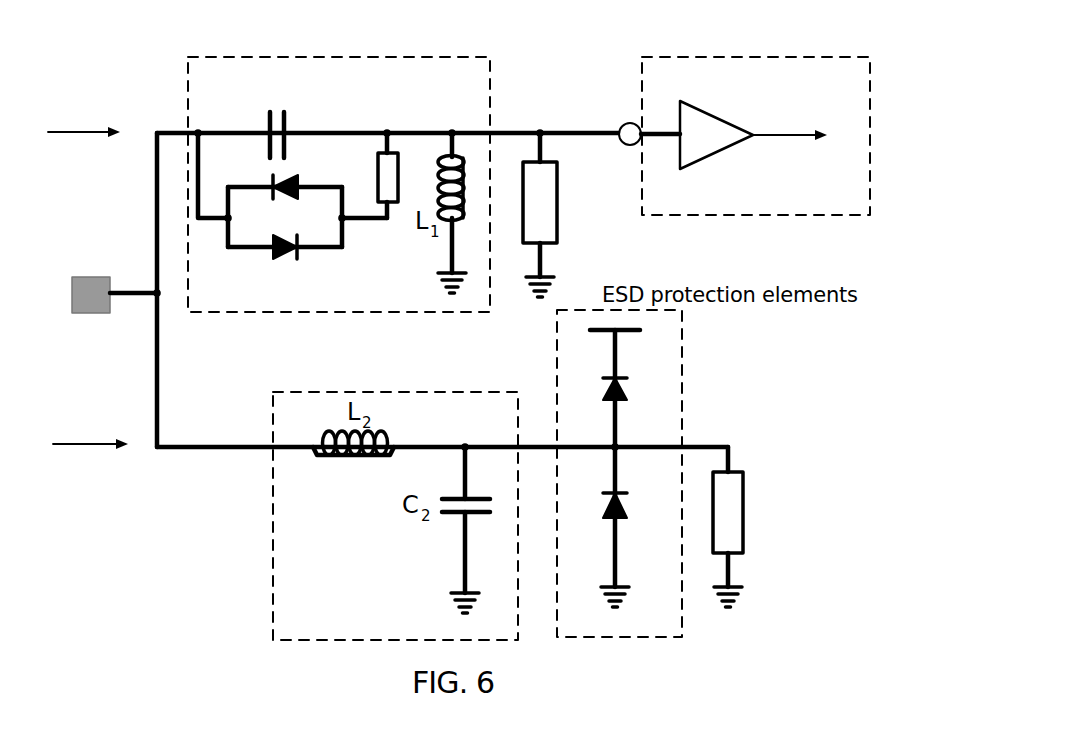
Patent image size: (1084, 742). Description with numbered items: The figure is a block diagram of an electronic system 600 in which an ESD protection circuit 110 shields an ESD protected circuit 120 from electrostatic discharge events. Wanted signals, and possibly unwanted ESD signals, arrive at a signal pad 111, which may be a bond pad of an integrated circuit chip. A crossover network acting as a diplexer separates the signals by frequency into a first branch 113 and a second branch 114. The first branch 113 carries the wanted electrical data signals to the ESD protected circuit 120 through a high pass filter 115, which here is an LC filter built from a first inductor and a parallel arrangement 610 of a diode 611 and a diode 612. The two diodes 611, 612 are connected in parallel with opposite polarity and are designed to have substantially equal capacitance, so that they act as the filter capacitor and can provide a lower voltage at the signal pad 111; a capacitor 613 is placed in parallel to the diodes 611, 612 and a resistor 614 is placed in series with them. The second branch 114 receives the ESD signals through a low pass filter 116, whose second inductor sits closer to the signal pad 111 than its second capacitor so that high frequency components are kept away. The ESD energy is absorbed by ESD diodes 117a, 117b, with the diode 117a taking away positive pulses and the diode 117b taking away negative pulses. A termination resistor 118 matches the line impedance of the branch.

The ESD protection circuit 110 is at (122, 67).
The signal pad 111 is at (88, 297).
The first branch 113 is at (79, 130).
The second branch 114 is at (85, 443).
The high pass filter 115 is at (490, 87).
The low pass filter 116 is at (410, 392).
The ESD diode 117a is at (630, 387).
The ESD diode 117b is at (639, 521).
The termination resistor 118 is at (745, 487).
The ESD protected circuit 120 is at (832, 215).
The parallel arrangement 610 is at (170, 212).
The diode 611 is at (343, 160).
The diode 612 is at (278, 258).
The capacitor 613 is at (291, 112).
The resistor 614 is at (387, 204).
The electronic system 600 is at (880, 687).